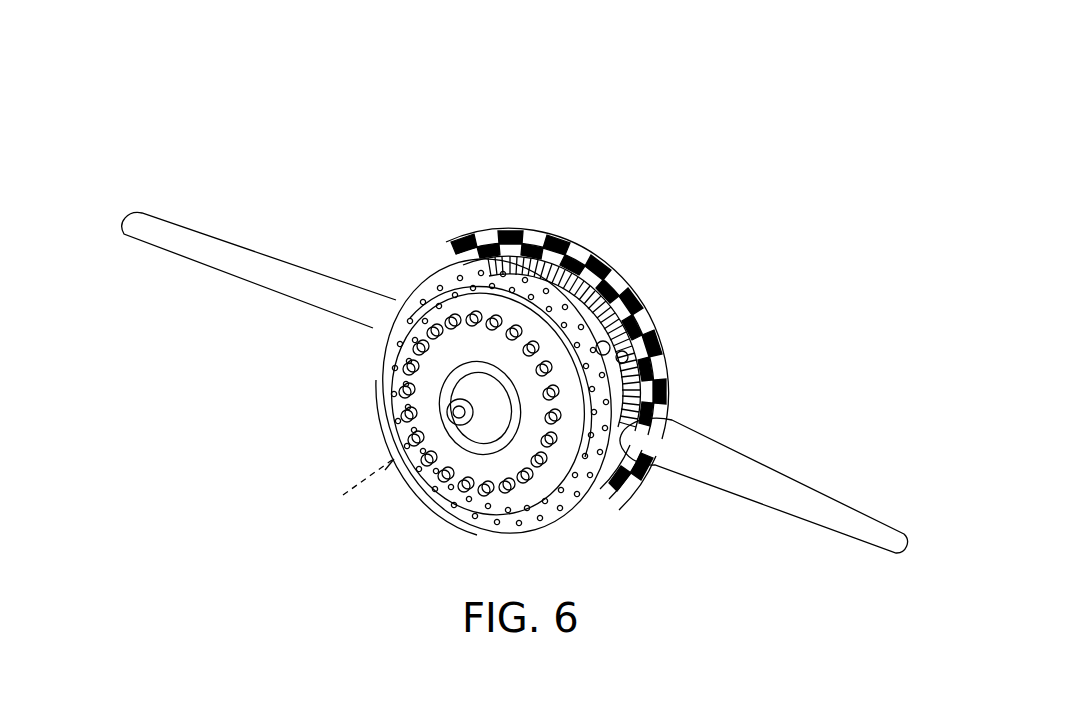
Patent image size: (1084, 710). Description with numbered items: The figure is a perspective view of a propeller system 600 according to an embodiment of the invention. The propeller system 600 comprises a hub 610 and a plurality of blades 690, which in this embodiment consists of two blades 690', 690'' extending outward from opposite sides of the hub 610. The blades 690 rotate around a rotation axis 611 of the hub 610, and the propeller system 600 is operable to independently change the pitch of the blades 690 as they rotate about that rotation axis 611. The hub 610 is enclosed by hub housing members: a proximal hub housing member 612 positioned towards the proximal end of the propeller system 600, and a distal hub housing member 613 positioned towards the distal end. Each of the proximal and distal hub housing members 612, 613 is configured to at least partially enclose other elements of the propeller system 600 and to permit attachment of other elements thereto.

The propeller system 600 is at (132, 137).
The hub 610 is at (457, 408).
The rotation axis 611 is at (390, 462).
The proximal hub housing member 612 is at (590, 495).
The distal hub housing member 613 is at (518, 227).
The plurality of blades 690 is at (515, 368).
The blade 690' is at (301, 223).
The blade 690'' is at (764, 454).